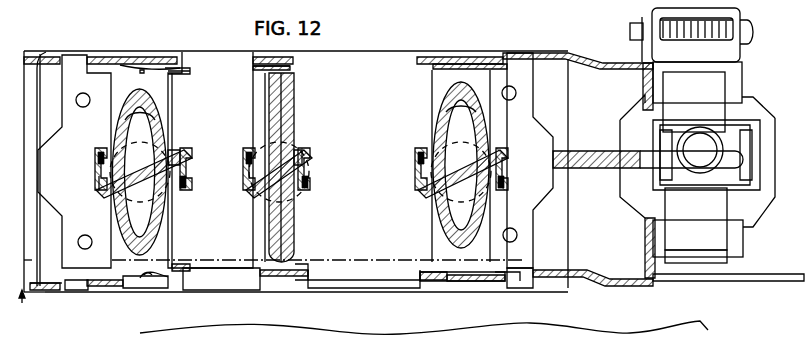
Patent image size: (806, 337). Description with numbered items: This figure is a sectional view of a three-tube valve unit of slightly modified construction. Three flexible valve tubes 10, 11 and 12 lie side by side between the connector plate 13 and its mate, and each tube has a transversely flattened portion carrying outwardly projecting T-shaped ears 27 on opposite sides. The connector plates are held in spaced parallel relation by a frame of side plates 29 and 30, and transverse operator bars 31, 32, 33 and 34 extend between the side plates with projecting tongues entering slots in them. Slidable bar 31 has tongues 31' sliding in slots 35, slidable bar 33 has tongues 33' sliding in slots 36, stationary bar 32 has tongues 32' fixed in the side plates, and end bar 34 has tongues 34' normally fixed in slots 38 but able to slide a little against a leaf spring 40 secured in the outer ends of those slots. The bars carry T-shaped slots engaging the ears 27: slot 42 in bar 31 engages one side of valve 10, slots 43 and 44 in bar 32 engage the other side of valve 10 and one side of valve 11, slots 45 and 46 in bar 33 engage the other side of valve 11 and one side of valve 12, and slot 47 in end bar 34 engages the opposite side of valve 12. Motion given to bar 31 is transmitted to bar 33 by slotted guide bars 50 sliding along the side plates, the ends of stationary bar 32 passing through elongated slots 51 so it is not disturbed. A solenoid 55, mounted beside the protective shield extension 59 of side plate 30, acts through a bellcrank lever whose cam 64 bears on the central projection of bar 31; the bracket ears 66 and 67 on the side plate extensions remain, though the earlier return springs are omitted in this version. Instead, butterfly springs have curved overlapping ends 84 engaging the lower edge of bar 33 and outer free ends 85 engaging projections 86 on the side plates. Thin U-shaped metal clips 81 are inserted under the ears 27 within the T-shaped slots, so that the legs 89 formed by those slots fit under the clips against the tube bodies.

The valve tube 10 is at (436, 214).
The valve tube 11 is at (262, 222).
The valve tube 12 is at (118, 244).
The connector plate 13 is at (585, 283).
The ears 27 is at (98, 176).
The side plate 29 is at (294, 66).
The side plate 30 is at (301, 286).
The operator bar 31 is at (525, 160).
The tongues 31' is at (532, 290).
The operator bar 32 is at (364, 195).
The tongues 32' is at (364, 300).
The operator bar 33 is at (216, 160).
The tongues 33' is at (221, 294).
The end bar 34 is at (74, 161).
The tongues 34' is at (83, 300).
The slots 35 is at (450, 286).
The slots 36 is at (128, 287).
The slots 38 is at (60, 286).
The leaf spring 40 is at (42, 64).
The T-shaped slot 42 is at (508, 188).
The T-shaped slot 43 is at (420, 192).
The T-shaped slot 44 is at (305, 150).
The T-shaped slot 45 is at (252, 192).
The T-shaped slot 46 is at (188, 152).
The T-shaped slot 47 is at (99, 190).
The guide bars 50 is at (175, 64).
The elongated slots 51 is at (275, 286).
The solenoid 55 is at (745, 69).
The protective shield extension 59 is at (745, 285).
The cam 64 is at (575, 158).
The bracket ear 66 is at (655, 82).
The bracket ear 67 is at (643, 260).
The metal clips 81 is at (98, 152).
The overlapping ends 84 is at (176, 264).
The outer free ends 85 is at (132, 64).
The projections 86 is at (152, 281).
The legs 89 is at (172, 154).